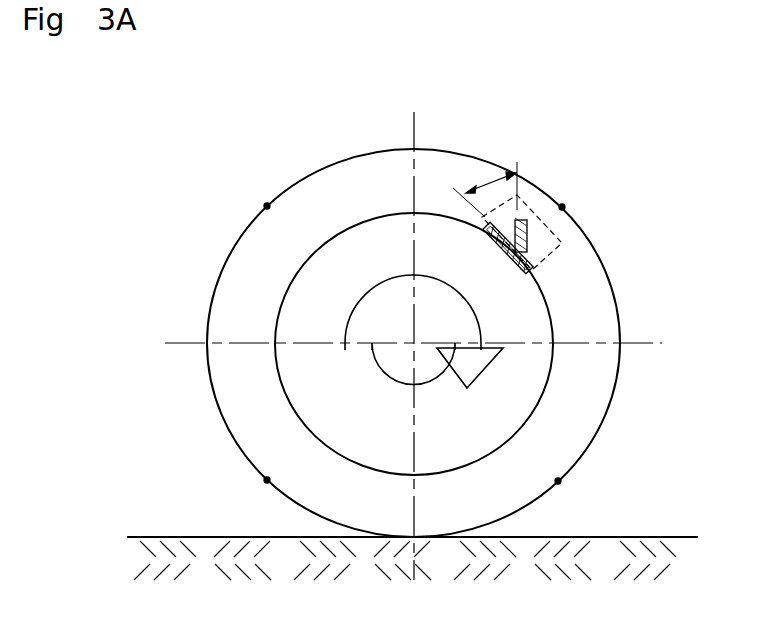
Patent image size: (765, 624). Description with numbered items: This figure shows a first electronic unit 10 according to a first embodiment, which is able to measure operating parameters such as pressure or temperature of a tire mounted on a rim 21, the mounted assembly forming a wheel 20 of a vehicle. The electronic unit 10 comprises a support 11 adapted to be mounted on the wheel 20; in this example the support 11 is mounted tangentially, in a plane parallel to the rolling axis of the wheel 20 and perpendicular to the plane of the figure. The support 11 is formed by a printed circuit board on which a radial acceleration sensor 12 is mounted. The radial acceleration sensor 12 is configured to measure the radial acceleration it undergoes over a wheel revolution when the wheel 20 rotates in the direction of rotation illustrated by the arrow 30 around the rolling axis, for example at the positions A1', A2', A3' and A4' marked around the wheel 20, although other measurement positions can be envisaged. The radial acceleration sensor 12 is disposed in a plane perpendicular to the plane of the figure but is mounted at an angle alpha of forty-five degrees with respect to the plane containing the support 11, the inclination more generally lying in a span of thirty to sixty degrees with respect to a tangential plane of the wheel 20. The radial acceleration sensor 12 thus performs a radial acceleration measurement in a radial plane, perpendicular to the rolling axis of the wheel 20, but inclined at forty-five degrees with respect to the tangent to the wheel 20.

The electronic unit 10 is at (533, 210).
The support 11 is at (528, 268).
The radial acceleration sensor 12 is at (528, 233).
The wheel 20 is at (593, 362).
The rim 21 is at (543, 397).
The arrow 30 is at (368, 313).
The position A1' is at (249, 196).
The position A2' is at (582, 200).
The position A3' is at (575, 495).
The position A4' is at (248, 494).